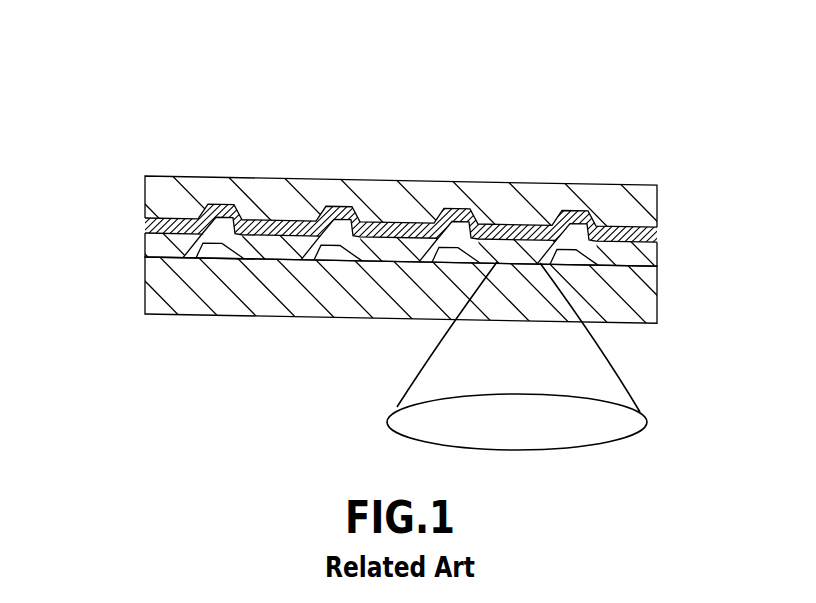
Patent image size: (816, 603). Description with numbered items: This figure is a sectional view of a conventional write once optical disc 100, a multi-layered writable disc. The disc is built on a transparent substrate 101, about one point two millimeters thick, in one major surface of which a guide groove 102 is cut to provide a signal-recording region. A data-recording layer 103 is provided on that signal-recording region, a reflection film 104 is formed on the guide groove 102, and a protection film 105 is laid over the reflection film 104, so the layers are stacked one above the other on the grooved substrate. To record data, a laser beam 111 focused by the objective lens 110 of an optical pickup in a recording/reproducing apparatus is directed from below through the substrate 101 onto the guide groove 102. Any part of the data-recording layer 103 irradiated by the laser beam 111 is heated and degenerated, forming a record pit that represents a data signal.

The write once optical disc 100 is at (313, 92).
The transparent substrate 101 is at (152, 294).
The guide groove 102 is at (183, 247).
The data-recording layer 103 is at (152, 250).
The reflection film 104 is at (152, 228).
The protection film 105 is at (152, 193).
The objective lens 110 is at (633, 438).
The laser beam 111 is at (607, 372).